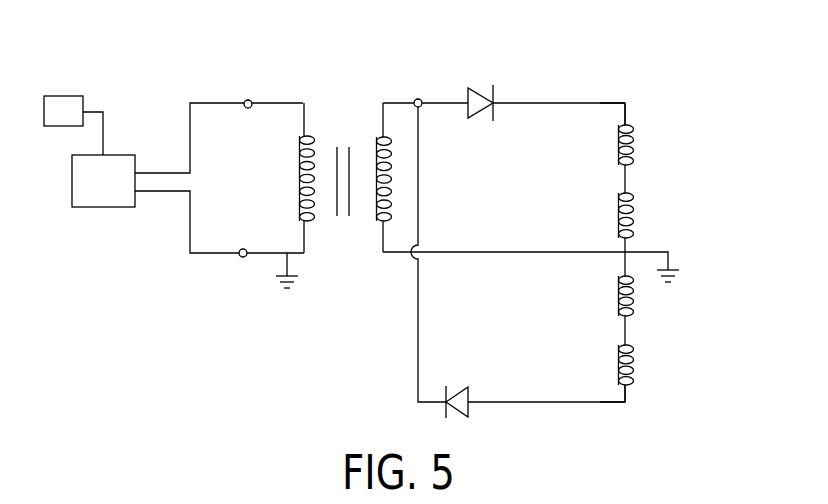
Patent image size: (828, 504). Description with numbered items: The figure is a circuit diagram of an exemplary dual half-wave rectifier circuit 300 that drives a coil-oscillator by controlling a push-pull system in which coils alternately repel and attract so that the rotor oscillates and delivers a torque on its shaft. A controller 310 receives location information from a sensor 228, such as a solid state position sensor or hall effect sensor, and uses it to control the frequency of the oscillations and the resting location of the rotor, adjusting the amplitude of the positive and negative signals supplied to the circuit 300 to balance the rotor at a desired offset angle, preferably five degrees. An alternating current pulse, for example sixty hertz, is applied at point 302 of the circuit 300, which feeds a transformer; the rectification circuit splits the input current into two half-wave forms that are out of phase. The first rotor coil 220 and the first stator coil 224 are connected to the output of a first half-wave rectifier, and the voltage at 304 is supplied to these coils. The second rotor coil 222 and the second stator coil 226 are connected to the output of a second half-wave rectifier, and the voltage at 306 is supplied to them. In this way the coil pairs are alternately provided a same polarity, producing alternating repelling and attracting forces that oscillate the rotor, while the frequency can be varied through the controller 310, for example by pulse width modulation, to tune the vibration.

The sensor 228 is at (65, 96).
The dual half-wave rectifier circuit 300 is at (212, 82).
The point of the circuit 302 is at (281, 100).
The controller 310 is at (110, 208).
The voltage waveform point 304 is at (626, 103).
The first stator coil 224 is at (632, 152).
The first rotor coil 220 is at (632, 211).
The second rotor coil 222 is at (632, 302).
The second stator coil 226 is at (632, 358).
The voltage waveform point 306 is at (626, 403).